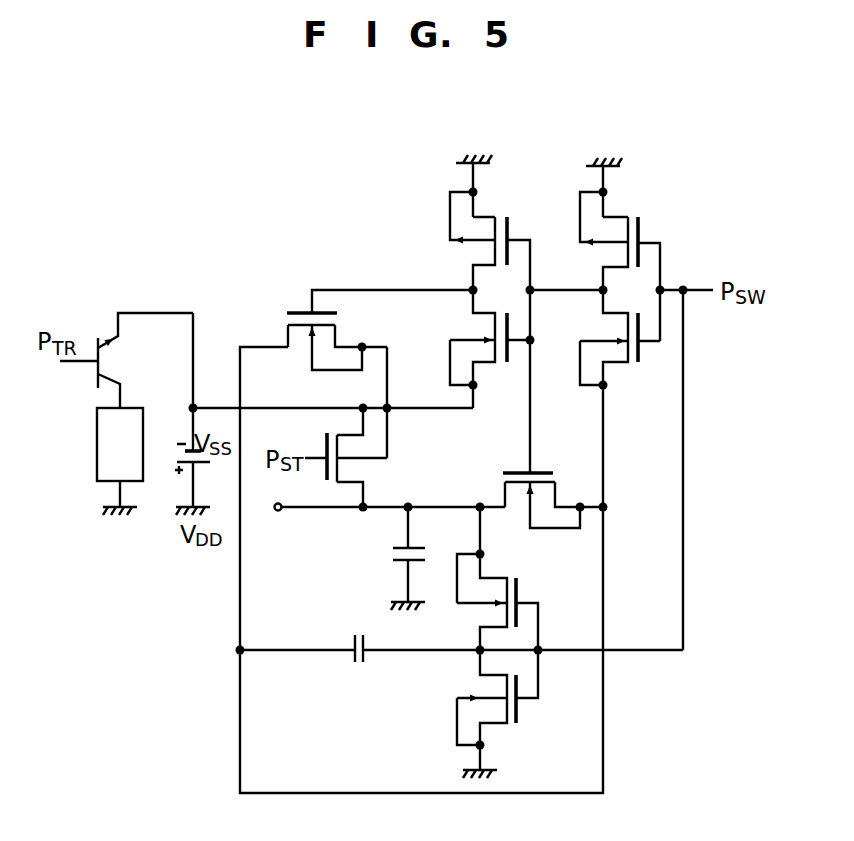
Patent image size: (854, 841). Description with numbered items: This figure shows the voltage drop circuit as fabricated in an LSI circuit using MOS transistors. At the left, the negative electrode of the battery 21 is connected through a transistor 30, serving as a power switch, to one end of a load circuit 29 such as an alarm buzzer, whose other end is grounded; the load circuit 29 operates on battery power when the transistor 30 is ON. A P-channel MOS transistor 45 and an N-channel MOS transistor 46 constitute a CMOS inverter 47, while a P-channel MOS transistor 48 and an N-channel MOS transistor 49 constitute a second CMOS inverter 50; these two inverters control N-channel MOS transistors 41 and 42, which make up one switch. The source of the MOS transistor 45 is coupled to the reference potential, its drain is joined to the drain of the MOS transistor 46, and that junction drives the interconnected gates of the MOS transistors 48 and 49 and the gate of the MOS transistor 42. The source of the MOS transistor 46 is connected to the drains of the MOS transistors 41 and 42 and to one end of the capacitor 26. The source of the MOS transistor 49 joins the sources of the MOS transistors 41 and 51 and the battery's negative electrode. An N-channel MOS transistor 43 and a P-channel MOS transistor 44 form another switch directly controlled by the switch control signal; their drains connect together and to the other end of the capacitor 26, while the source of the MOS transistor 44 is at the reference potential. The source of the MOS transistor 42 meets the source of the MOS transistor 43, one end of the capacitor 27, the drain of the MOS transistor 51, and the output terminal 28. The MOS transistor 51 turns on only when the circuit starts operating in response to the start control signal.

The battery 21 is at (198, 463).
The capacitor 26 is at (357, 663).
The capacitor 27 is at (392, 552).
The output terminal 28 is at (278, 511).
The load circuit 29 is at (97, 437).
The transistor 30 is at (108, 360).
The N-channel MOS transistor 41 is at (300, 308).
The N-channel MOS transistor 42 is at (502, 480).
The N-channel MOS transistor 43 is at (548, 582).
The P-channel MOS transistor 44 is at (520, 707).
The P-channel MOS transistor 45 is at (633, 212).
The N-channel MOS transistor 46 is at (623, 365).
The CMOS inverter 47 is at (632, 280).
The P-channel MOS transistor 48 is at (495, 203).
The N-channel MOS transistor 49 is at (495, 367).
The CMOS inverter 50 is at (501, 283).
The N-channel MOS transistor 51 is at (348, 470).